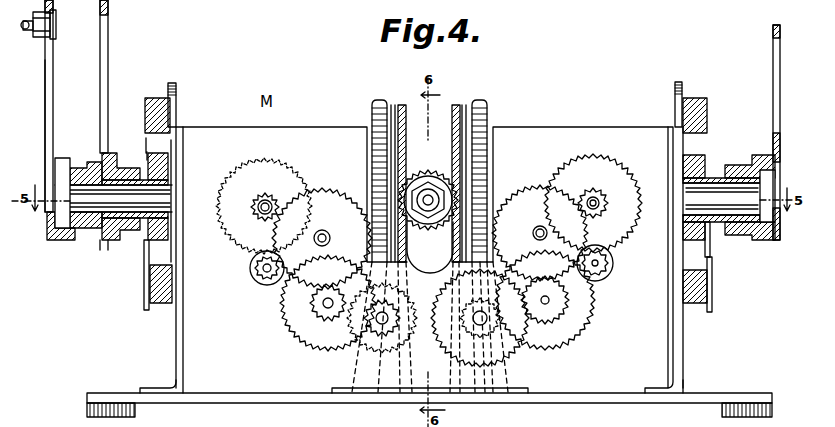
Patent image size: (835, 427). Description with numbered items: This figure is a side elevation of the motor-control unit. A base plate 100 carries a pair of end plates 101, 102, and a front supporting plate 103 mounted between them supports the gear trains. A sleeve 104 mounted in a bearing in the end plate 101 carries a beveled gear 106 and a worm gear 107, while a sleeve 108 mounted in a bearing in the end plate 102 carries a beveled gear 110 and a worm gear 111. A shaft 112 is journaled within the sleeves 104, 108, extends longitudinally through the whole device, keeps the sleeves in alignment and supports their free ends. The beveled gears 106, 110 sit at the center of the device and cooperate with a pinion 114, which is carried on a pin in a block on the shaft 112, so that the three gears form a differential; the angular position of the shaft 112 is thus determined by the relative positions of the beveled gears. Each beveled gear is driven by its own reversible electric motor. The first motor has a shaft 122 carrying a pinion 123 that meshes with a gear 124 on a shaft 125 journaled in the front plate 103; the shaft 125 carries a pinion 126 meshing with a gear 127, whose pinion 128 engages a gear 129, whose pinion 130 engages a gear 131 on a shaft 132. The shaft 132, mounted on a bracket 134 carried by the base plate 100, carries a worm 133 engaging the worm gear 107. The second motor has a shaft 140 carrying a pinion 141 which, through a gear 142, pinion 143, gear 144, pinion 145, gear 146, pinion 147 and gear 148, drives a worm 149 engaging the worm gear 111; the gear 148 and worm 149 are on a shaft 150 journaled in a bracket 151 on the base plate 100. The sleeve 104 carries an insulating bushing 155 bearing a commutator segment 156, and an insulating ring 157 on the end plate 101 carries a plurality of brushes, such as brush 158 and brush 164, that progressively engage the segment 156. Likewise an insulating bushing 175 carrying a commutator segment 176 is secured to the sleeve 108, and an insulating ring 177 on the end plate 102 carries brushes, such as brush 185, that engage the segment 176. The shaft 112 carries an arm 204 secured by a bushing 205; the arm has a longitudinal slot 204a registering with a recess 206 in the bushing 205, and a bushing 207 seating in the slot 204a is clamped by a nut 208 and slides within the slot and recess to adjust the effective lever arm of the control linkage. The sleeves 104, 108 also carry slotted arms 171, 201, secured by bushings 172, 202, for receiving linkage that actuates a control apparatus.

The base plate 100 is at (580, 393).
The end plate 101 is at (175, 368).
The end plate 102 is at (683, 370).
The front supporting plate 103 is at (312, 127).
The sleeve 104 is at (165, 220).
The beveled gear 106 is at (401, 118).
The worm gear 107 is at (380, 102).
The sleeve 108 is at (721, 167).
The beveled gear 110 is at (455, 105).
The worm gear 111 is at (482, 103).
The shaft 112 is at (163, 200).
The pinion 114 is at (428, 172).
The shaft 122 is at (270, 285).
The pinion 123 is at (258, 272).
The gear 124 is at (236, 238).
The shaft 125 is at (259, 204).
The pinion 126 is at (275, 199).
The gear 127 is at (326, 190).
The pinion 128 is at (327, 235).
The gear 129 is at (291, 330).
The pinion 130 is at (320, 322).
The gear 131 is at (368, 338).
The shaft 132 is at (398, 330).
The worm 133 is at (390, 310).
The bracket 134 is at (370, 388).
The shaft 140 is at (608, 263).
The pinion 141 is at (604, 272).
The gear 142 is at (626, 176).
The pinion 143 is at (594, 189).
The gear 144 is at (515, 186).
The pinion 145 is at (535, 231).
The gear 146 is at (597, 313).
The pinion 147 is at (559, 314).
The gear 148 is at (513, 350).
The worm 149 is at (468, 301).
The shaft 150 is at (473, 319).
The bracket 151 is at (497, 388).
The insulating bushing 155 is at (168, 165).
The commutator segment 156 is at (146, 153).
The insulating ring 157 is at (165, 303).
The brush 158 is at (146, 310).
The brush 164 is at (150, 98).
The slotted arm 171 is at (108, 57).
The bushing 172 is at (127, 240).
The insulating bushing 175 is at (683, 230).
The commutator segment 176 is at (710, 245).
The insulating ring 177 is at (709, 312).
The brush 185 is at (707, 297).
The slotted arm 201 is at (773, 106).
The bushing 202 is at (760, 240).
The arm 204 is at (53, 78).
The longitudinal slot 204a is at (53, 118).
The bushing 205 is at (82, 163).
The recess 206 is at (60, 240).
The bushing 207 is at (56, 25).
The nut 208 is at (38, 37).